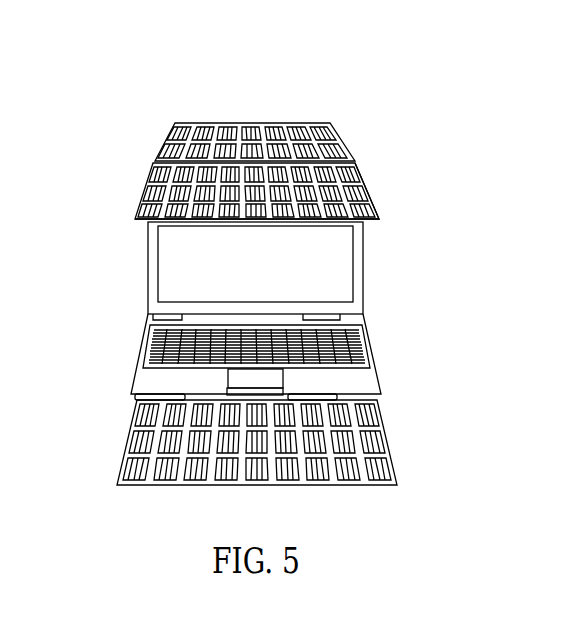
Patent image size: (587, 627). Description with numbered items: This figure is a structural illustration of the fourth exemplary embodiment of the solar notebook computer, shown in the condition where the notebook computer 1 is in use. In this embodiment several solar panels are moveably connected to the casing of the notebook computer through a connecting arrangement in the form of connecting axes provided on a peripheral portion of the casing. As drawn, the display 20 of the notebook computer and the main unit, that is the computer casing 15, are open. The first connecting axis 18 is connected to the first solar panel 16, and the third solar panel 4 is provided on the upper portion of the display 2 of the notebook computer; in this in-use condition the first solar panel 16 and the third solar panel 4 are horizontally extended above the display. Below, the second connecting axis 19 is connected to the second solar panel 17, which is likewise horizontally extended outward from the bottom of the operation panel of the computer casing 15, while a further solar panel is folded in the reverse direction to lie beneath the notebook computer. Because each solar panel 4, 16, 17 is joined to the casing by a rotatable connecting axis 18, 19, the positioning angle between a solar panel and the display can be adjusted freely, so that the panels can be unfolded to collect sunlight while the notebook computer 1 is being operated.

The notebook computer 1 is at (256, 311).
The display 2 is at (284, 173).
The third solar panel 4 is at (330, 125).
The computer casing 15 is at (360, 380).
The first solar panel 16 is at (378, 218).
The second solar panel 17 is at (383, 447).
The first connecting axis 18 is at (247, 140).
The second connecting axis 19 is at (185, 395).
The display 20 is at (188, 283).